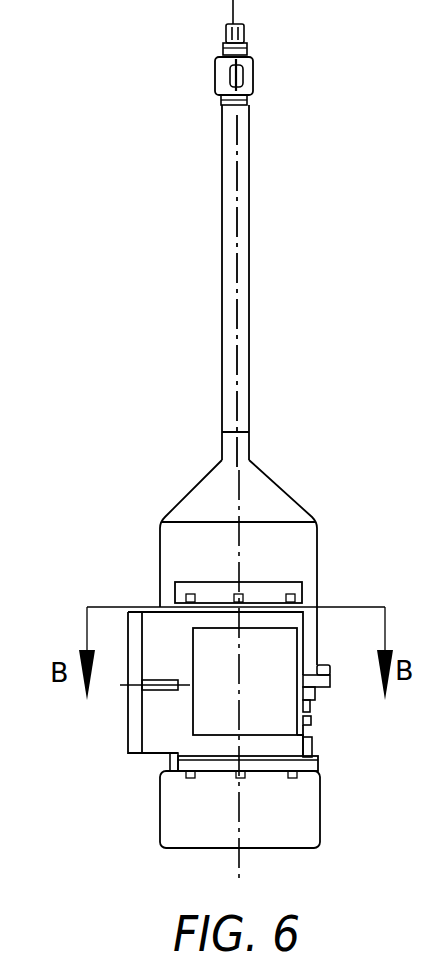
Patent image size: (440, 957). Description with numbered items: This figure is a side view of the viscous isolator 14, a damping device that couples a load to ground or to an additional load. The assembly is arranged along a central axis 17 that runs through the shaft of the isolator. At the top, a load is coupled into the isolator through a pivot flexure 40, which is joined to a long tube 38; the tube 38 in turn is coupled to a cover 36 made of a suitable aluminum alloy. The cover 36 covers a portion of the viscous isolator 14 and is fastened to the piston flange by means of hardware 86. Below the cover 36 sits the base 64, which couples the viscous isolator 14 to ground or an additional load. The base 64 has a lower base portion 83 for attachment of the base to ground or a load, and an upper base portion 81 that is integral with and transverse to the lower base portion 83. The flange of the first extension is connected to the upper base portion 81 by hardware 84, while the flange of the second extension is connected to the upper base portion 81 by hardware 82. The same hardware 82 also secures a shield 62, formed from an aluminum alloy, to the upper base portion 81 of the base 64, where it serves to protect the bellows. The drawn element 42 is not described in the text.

The viscous isolator 14 is at (193, 160).
The pivot flexure 40 is at (253, 60).
The tube 38 is at (250, 252).
The axis 17 is at (237, 378).
The cover 36 is at (287, 493).
The hardware 84 is at (185, 597).
The base 64 is at (100, 707).
The lower base portion 83 is at (132, 727).
The upper base portion 81 is at (178, 733).
The hardware 82 is at (190, 776).
The shield 62 is at (168, 846).
The hardware 86 is at (332, 668).
The spacer 42 is at (308, 722).